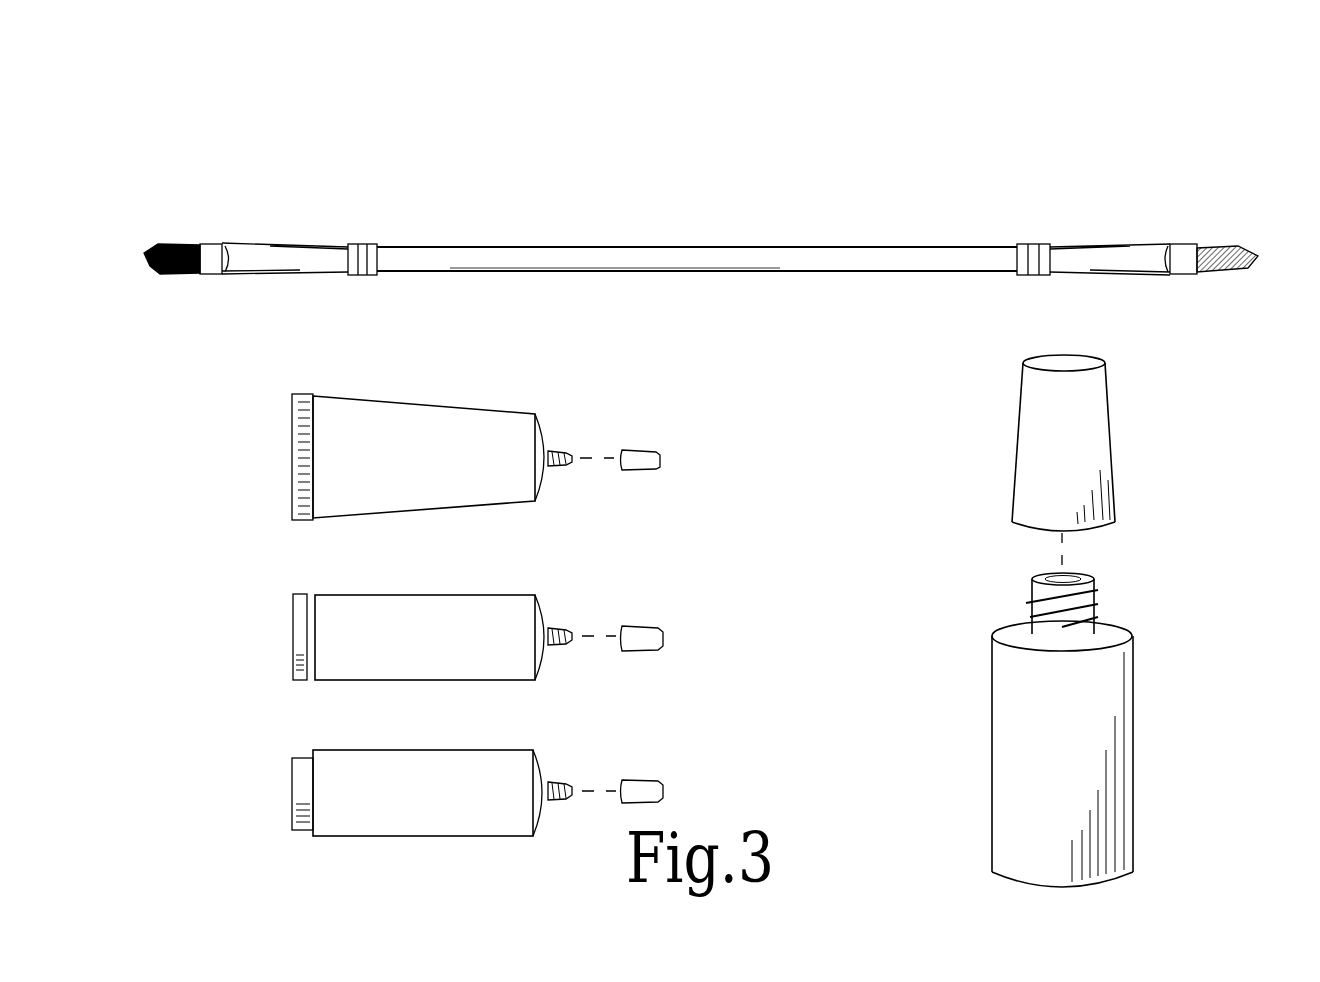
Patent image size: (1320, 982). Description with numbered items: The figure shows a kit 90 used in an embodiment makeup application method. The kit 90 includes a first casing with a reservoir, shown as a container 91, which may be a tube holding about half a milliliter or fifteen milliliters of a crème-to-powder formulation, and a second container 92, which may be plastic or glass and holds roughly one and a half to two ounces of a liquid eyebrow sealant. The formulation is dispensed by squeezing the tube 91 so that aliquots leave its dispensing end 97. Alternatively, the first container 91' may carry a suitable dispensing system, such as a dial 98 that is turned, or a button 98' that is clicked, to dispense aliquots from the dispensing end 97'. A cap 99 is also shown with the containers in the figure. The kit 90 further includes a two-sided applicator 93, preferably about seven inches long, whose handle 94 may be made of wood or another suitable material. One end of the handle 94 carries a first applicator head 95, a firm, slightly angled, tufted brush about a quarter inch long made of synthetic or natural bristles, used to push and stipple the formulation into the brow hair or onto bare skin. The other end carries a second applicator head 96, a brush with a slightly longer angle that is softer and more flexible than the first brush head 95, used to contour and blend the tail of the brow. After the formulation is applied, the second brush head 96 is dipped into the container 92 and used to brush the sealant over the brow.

The kit 90 is at (757, 197).
The container 91 is at (453, 417).
The container 91' is at (489, 600).
The container 92 is at (1042, 693).
The two-sided applicator 93 is at (574, 220).
The handle 94 is at (753, 272).
The first applicator head 95 is at (184, 244).
The second applicator head 96 is at (1218, 244).
The dispensing end 97 is at (589, 390).
The dispensing end 97' is at (592, 580).
The dial 98 is at (242, 625).
The button 98' is at (246, 778).
The cap 99 is at (1058, 438).